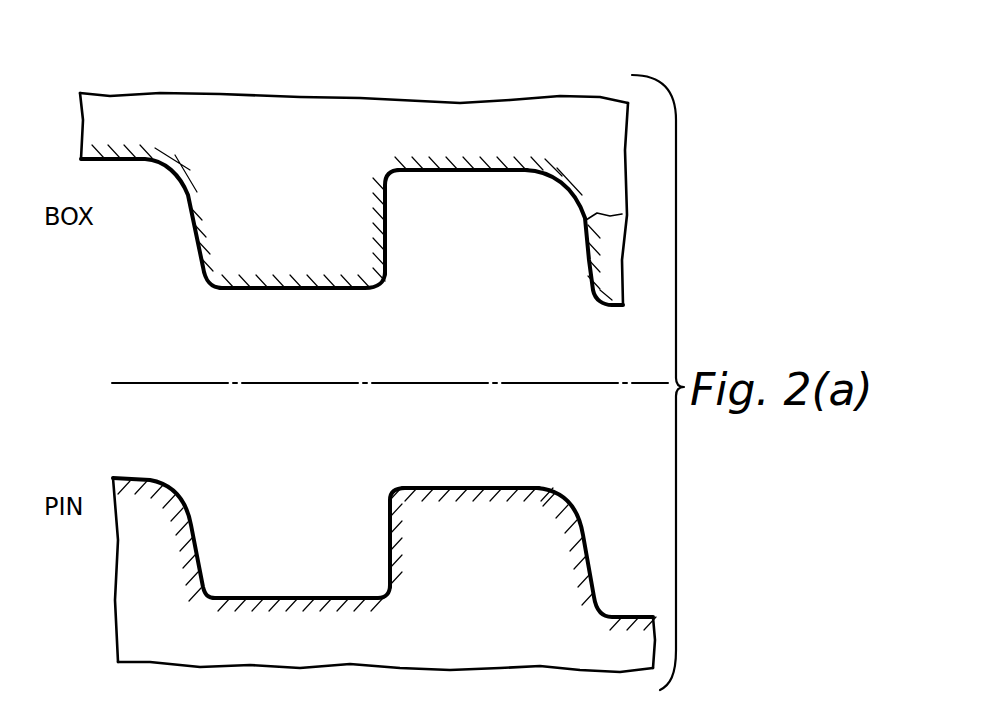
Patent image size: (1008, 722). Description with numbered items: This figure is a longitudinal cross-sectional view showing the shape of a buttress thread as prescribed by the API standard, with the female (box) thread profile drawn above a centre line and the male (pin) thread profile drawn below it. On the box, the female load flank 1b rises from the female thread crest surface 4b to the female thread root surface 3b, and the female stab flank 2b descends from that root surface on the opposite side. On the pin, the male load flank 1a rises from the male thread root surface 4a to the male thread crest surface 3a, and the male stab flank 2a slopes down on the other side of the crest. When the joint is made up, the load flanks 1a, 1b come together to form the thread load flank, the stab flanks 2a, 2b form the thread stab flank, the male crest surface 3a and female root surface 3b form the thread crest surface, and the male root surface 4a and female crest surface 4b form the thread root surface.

The load flank of the male thread 1a is at (388, 545).
The load flank of the female thread 1b is at (383, 222).
The stab flank of the male thread 2a is at (587, 557).
The stab flank of the female thread 2b is at (620, 216).
The male thread crest surface 3a is at (474, 488).
The female thread root surface 3b is at (468, 168).
The male thread root surface 4a is at (250, 597).
The female thread crest surface 4b is at (258, 287).